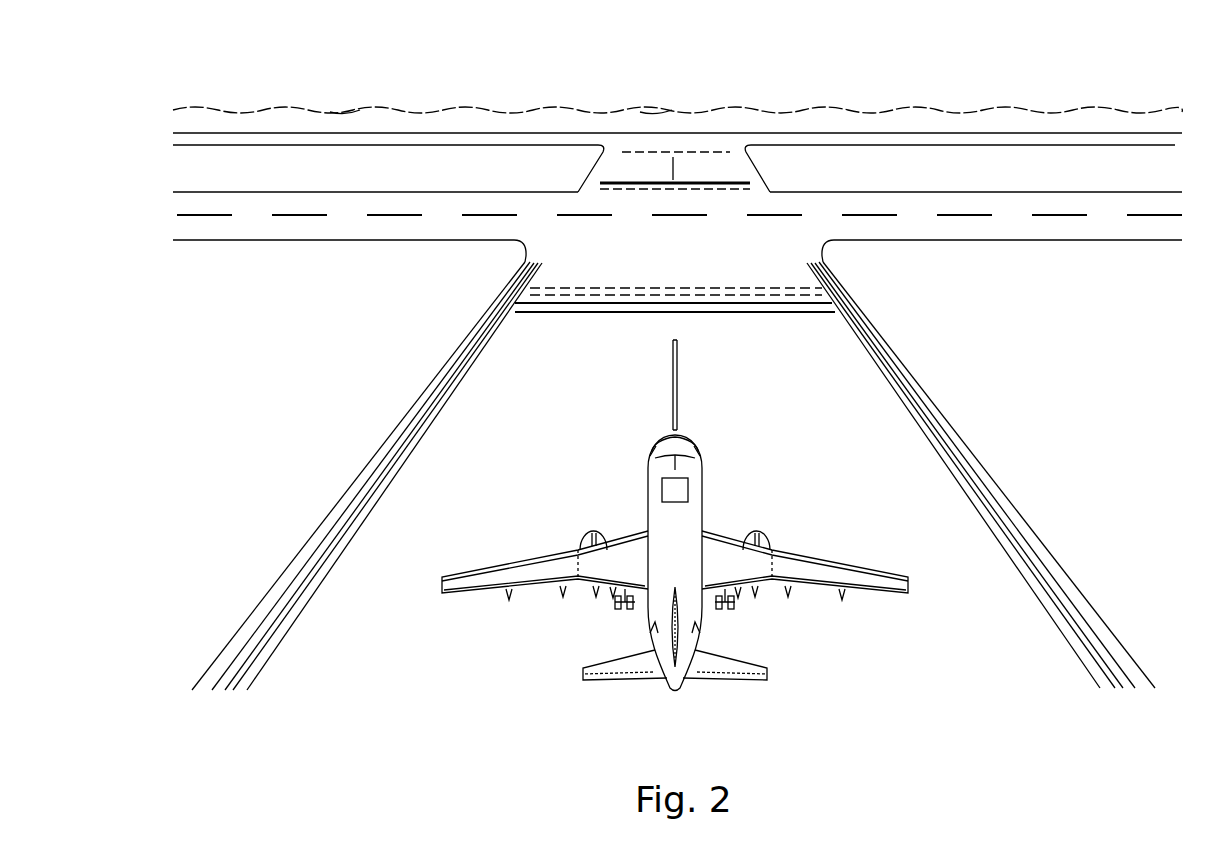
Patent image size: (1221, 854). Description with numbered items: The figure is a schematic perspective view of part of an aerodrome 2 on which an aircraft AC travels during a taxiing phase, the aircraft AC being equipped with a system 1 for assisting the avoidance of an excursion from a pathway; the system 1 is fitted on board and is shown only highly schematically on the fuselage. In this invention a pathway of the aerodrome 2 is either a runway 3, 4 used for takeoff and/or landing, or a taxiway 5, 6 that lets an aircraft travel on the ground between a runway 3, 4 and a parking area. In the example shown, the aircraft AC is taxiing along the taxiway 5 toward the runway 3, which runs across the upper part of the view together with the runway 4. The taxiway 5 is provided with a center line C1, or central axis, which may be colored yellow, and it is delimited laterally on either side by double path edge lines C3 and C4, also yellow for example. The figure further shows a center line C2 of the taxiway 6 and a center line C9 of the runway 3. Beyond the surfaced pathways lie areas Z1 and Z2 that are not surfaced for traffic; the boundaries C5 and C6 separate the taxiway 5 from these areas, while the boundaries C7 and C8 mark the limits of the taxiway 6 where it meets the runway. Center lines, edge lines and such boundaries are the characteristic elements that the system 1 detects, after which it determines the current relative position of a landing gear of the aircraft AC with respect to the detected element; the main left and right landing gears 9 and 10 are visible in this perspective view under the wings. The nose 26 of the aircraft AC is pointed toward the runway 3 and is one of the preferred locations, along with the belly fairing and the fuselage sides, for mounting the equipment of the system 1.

The system for assisting the avoidance of an excursion from a pathway 1 is at (690, 487).
The aerodrome 2 is at (230, 343).
The runway 3 is at (295, 240).
The runway 4 is at (403, 135).
The taxiway 5 is at (910, 490).
The taxiway 6 is at (685, 110).
The main left landing gear 9 is at (595, 615).
The main right landing gear 10 is at (760, 604).
The nose 26 is at (648, 437).
The aircraft AC is at (675, 562).
The center line of the taxiway C1 is at (678, 400).
The center line of the taxiway C2 is at (690, 165).
The path edge line C3 is at (288, 622).
The path edge line C4 is at (1060, 622).
The boundary of the taxiway C5 is at (385, 430).
The boundary of the taxiway C6 is at (938, 403).
The boundary of the taxiway C7 is at (597, 167).
The boundary of the taxiway C8 is at (757, 168).
The center line of the runway C9 is at (880, 200).
The area not surfaced for traffic Z1 is at (230, 500).
The area not surfaced for traffic Z2 is at (1072, 490).